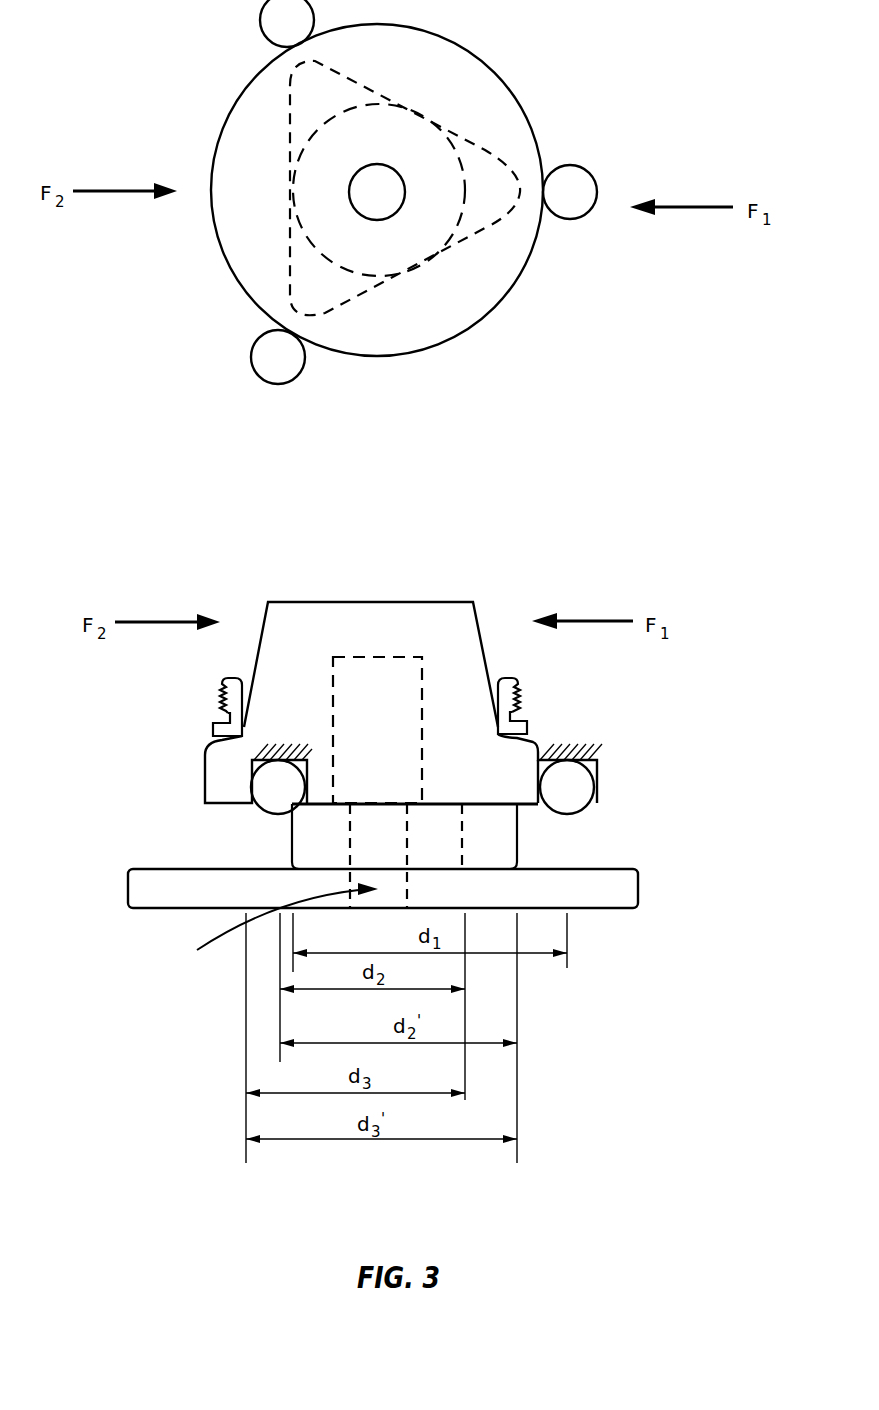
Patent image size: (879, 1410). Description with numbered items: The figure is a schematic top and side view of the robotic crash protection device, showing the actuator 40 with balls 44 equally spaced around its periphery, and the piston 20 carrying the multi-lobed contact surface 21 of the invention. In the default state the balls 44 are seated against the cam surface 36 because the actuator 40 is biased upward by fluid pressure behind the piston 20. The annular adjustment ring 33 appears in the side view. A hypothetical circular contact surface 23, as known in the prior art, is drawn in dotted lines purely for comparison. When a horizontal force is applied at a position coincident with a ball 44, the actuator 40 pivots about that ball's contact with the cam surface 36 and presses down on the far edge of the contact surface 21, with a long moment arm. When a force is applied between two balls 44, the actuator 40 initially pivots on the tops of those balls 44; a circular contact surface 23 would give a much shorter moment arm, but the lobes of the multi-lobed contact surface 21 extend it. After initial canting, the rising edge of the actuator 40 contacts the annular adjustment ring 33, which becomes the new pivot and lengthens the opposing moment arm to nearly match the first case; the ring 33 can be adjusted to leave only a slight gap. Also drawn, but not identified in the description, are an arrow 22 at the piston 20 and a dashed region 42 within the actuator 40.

The piston 20 is at (640, 887).
The multi-lobed contact surface 21 is at (482, 173).
The arrow indicating base movement 22 is at (276, 930).
The hypothetical circular contact surface 23 is at (445, 202).
The annular adjustment ring 33 is at (228, 703).
The cam surface 36 is at (597, 761).
The actuator 40 is at (482, 57).
The cavity 42 is at (396, 702).
The balls 44 is at (580, 182).